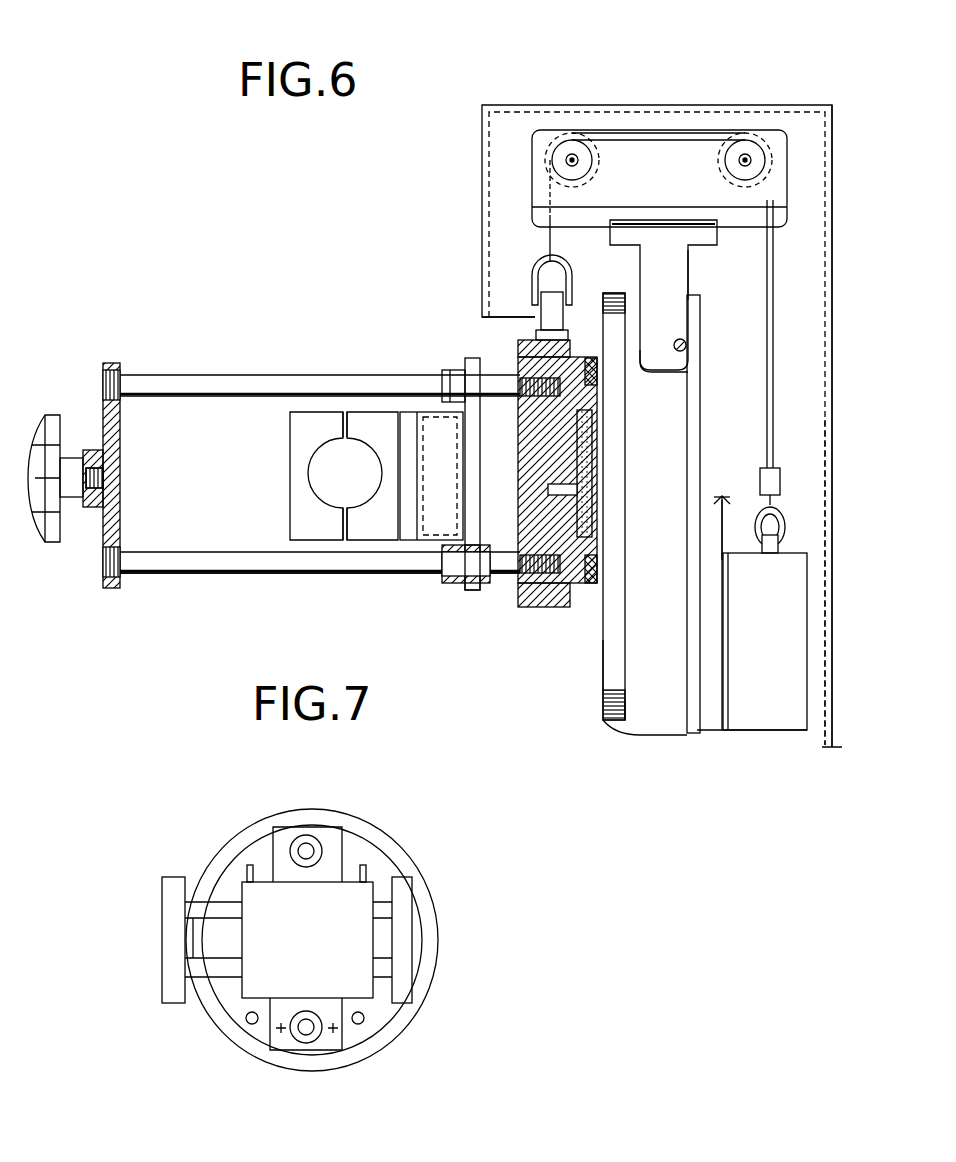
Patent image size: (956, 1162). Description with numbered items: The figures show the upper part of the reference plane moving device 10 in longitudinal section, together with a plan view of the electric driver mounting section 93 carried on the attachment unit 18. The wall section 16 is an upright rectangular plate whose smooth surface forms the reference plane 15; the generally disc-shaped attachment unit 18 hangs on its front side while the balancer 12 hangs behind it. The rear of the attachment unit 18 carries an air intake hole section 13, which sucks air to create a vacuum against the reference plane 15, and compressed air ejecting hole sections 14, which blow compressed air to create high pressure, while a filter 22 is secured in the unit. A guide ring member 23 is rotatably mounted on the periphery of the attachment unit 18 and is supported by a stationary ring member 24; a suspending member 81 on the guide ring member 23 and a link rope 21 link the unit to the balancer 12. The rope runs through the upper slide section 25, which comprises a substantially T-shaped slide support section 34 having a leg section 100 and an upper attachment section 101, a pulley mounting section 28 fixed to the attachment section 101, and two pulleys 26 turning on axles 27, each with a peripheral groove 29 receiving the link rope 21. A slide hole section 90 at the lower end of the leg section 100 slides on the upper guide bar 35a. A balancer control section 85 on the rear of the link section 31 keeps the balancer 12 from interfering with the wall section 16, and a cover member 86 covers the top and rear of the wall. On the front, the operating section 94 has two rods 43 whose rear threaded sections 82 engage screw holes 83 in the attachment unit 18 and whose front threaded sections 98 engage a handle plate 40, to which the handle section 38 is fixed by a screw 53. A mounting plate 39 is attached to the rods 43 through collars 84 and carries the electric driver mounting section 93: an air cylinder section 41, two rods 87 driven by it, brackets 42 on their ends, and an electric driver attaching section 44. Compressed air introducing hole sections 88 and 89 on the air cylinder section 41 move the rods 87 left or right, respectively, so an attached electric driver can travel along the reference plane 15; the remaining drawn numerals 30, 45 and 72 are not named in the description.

In FIG. 6, the reference plane moving device 10 is at (170, 268).
In FIG. 6, the balancer 12 is at (790, 676).
In FIG. 6, the air intake hole section 13 is at (592, 442).
In FIG. 6, the compressed air ejecting hole sections 14 is at (597, 374).
In FIG. 6, the reference plane 15 is at (603, 700).
In FIG. 6, the wall section 16 is at (603, 722).
In FIG. 6, the attachment unit 18 is at (603, 650).
In FIG. 7, the attachment unit 18 is at (393, 1045).
In FIG. 6, the link rope 21 is at (774, 400).
In FIG. 6, the filter 22 is at (578, 482).
In FIG. 6, the guide ring member 23 is at (577, 607).
In FIG. 6, the stationary ring member 24 is at (545, 607).
In FIG. 7, the stationary ring member 24 is at (432, 905).
In FIG. 6, the upper slide section 25 is at (792, 125).
In FIG. 6, the pulleys 26 is at (562, 135).
In FIG. 6, the axles 27 is at (566, 161).
In FIG. 6, the pulley mounting section 28 is at (655, 135).
In FIG. 6, the peripheral groove 29 is at (590, 140).
In FIG. 6, the housing frame 30 is at (512, 100).
In FIG. 6, the link section 31 is at (626, 462).
In FIG. 6, the slide support section 34 is at (690, 258).
In FIG. 6, the upper guide bar 35a is at (686, 345).
In FIG. 6, the handle section 38 is at (45, 415).
In FIG. 6, the mounting plate 39 is at (478, 590).
In FIG. 7, the mounting plate 39 is at (335, 838).
In FIG. 6, the handle plate 40 is at (103, 556).
In FIG. 6, the air cylinder section 41 is at (432, 412).
In FIG. 7, the air cylinder section 41 is at (260, 985).
In FIG. 6, the brackets 42 is at (470, 555).
In FIG. 7, the brackets 42 is at (165, 945).
In FIG. 6, the rods 43 is at (215, 380).
In FIG. 7, the rods 43 is at (306, 845).
In FIG. 6, the electric driver attaching section 44 is at (290, 470).
In FIG. 6, the plate edge 45 is at (690, 266).
In FIG. 6, the screw 53 is at (120, 472).
In FIG. 6, the hook 72 is at (532, 285).
In FIG. 6, the suspending member 81 is at (541, 322).
In FIG. 6, the threaded sections 82 is at (518, 438).
In FIG. 6, the screw holes 83 is at (545, 560).
In FIG. 6, the collars 84 is at (455, 375).
In FIG. 7, the collars 84 is at (322, 1046).
In FIG. 6, the balancer control section 85 is at (782, 520).
In FIG. 6, the cover member 86 is at (830, 635).
In FIG. 7, the rods 87 is at (215, 905).
In FIG. 7, the compressed air introducing hole section 88 is at (366, 865).
In FIG. 7, the compressed air introducing hole section 89 is at (250, 865).
In FIG. 6, the slide hole section 90 is at (660, 370).
In FIG. 6, the electric driver mounting section 93 is at (345, 415).
In FIG. 6, the operating section 94 is at (205, 578).
In FIG. 6, the threaded sections 98 is at (112, 365).
In FIG. 6, the leg section 100 is at (697, 287).
In FIG. 6, the attachment section 101 is at (717, 236).